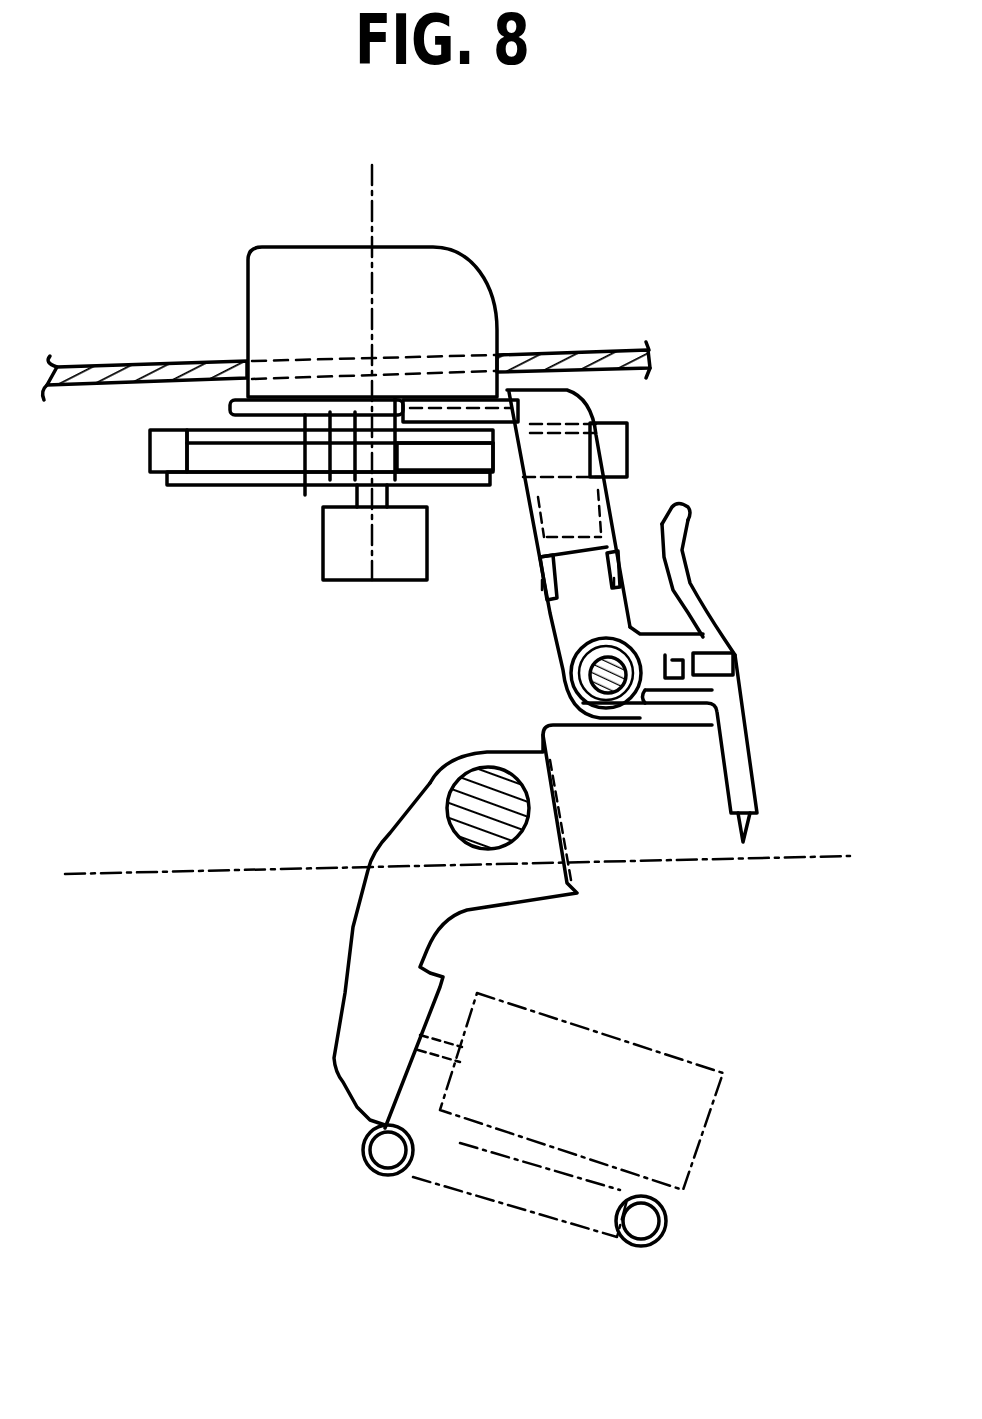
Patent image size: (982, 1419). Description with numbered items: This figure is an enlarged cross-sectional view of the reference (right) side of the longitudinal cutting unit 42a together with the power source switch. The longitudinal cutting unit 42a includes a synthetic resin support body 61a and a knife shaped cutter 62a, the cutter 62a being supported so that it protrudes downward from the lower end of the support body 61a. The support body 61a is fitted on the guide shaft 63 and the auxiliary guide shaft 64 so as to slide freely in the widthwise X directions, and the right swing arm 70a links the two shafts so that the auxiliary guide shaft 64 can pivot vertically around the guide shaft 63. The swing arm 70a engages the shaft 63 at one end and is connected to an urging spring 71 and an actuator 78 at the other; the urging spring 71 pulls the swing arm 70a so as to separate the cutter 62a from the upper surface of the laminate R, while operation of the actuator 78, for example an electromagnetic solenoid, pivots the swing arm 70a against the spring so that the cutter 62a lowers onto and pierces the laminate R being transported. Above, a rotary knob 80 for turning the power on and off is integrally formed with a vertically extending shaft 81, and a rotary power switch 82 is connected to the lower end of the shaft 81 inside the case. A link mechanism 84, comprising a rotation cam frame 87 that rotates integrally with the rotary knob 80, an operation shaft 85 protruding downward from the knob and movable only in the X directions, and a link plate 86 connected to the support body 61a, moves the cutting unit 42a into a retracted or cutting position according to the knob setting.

The rotary knob 80 is at (338, 272).
The shaft 81 is at (387, 490).
The rotary power switch 82 is at (347, 560).
The link mechanism 84 is at (640, 433).
The operation shaft 85 is at (310, 423).
The link plate 86 is at (303, 420).
The rotation cam frame 87 is at (167, 460).
The longitudinal cutting unit 42a is at (723, 600).
The support body 61a is at (740, 730).
The knife shaped cutter 62a is at (750, 837).
The guide shaft 63 is at (492, 810).
The auxiliary guide shaft 64 is at (571, 672).
The swing arm 70a is at (363, 1013).
The urging spring 71 is at (513, 1207).
The actuator 78 is at (676, 1126).
The laminate R is at (807, 857).